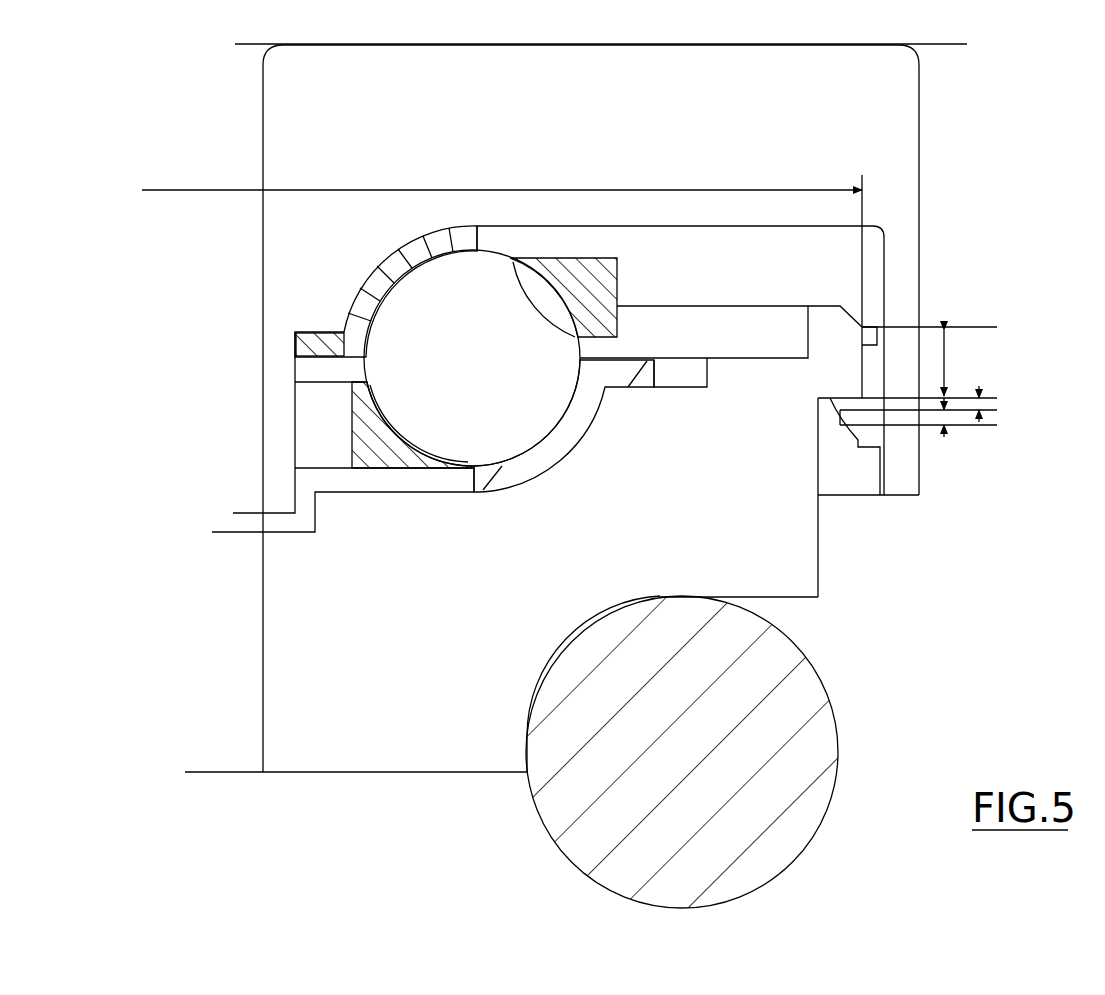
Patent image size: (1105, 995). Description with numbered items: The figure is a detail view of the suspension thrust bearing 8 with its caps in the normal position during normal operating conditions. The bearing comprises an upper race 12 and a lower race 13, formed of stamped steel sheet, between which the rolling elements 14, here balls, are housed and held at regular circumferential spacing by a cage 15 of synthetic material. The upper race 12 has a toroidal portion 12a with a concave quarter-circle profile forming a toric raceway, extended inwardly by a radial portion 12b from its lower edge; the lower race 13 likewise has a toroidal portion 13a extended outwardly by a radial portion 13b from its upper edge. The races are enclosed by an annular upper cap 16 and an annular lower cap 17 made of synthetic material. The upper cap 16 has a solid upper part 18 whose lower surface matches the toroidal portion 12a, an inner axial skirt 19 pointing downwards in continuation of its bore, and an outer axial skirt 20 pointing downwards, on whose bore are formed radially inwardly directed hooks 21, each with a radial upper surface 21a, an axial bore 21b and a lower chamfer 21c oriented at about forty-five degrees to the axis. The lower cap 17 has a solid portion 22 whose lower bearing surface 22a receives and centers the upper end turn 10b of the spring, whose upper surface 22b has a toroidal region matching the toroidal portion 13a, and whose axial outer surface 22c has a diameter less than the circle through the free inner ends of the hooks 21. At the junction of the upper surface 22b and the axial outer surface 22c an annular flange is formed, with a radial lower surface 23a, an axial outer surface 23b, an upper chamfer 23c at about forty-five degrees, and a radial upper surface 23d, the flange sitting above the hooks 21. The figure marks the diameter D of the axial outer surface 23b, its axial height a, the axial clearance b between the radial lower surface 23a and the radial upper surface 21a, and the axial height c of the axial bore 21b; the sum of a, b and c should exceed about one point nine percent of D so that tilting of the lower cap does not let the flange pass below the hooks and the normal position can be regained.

The suspension thrust bearing 8 is at (238, 276).
The upper end turn of the spring 10b is at (800, 740).
The upper race 12 is at (405, 258).
The toroidal portion of the upper race 12a is at (458, 243).
The radial portion of the upper race 12b is at (318, 345).
The lower race 13 is at (578, 428).
The toroidal portion of the lower race 13a is at (527, 470).
The radial portion of the lower race 13b is at (640, 368).
The rolling elements 14 is at (488, 366).
The cage 15 is at (604, 284).
The upper cap 16 is at (588, 110).
The lower cap 17 is at (456, 625).
The solid upper part of the upper cap 18 is at (888, 112).
The inner axial skirt 19 is at (273, 470).
The outer axial skirt 20 is at (905, 480).
The hooks 21 is at (870, 433).
The radial upper surface of the hooks 21a is at (872, 413).
The axial bore of the hooks 21b is at (875, 395).
The lower chamfer of the hooks 21c is at (852, 447).
The solid portion of the lower cap 22 is at (385, 740).
The bearing surface 22a is at (562, 636).
The upper surface of the solid portion 22b is at (408, 482).
The axial outer surface of the solid portion 22c is at (818, 568).
The radial lower surface of the flange 23a is at (820, 400).
The axial outer surface of the flange 23b is at (863, 343).
The upper chamfer of the flange 23c is at (850, 305).
The radial upper surface of the flange 23d is at (818, 305).
The diameter of the axial outer surface of the flange D is at (502, 282).
The axial height of the axial outer surface of the flange a is at (933, 363).
The axial distance between flange lower surface and hook upper surface b is at (969, 404).
The axial height of the axial inner surface of the hooks c is at (935, 417).